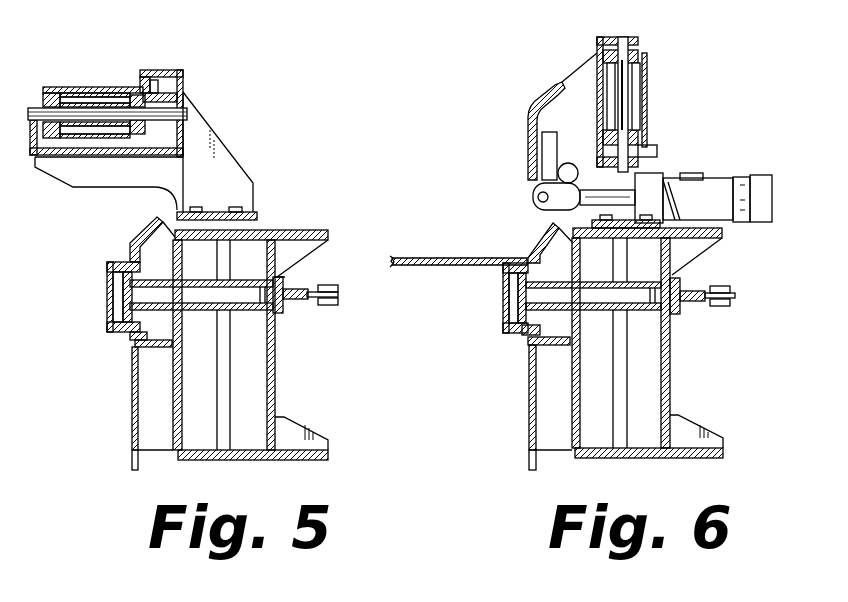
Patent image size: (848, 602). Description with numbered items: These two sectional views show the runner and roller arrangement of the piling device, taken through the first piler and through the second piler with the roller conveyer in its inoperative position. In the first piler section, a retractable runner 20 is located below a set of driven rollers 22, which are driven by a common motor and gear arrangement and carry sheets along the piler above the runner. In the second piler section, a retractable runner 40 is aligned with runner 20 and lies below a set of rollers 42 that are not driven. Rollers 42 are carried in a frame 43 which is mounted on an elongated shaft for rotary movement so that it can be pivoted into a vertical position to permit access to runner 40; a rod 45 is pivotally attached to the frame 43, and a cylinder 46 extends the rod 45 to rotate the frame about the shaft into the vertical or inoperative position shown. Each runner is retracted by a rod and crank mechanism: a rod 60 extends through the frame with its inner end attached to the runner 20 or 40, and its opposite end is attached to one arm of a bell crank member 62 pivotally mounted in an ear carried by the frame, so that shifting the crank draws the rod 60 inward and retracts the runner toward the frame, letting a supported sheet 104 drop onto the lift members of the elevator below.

In FIG. 5, the runner 20 is at (108, 292).
In FIG. 5, the driven rollers 22 is at (97, 58).
In FIG. 6, the runner 40 is at (503, 315).
In FIG. 6, the rollers 42 is at (648, 85).
In FIG. 6, the frame 43 is at (578, 73).
In FIG. 6, the rods 45 is at (588, 208).
In FIG. 6, the cylinders 46 is at (652, 180).
In FIG. 5, the rods 60 is at (242, 305).
In FIG. 6, the rods 60 is at (643, 298).
In FIG. 5, the bell crank member 62 is at (307, 287).
In FIG. 6, the bell crank member 62 is at (712, 305).
In FIG. 6, the sheet 104 is at (470, 238).